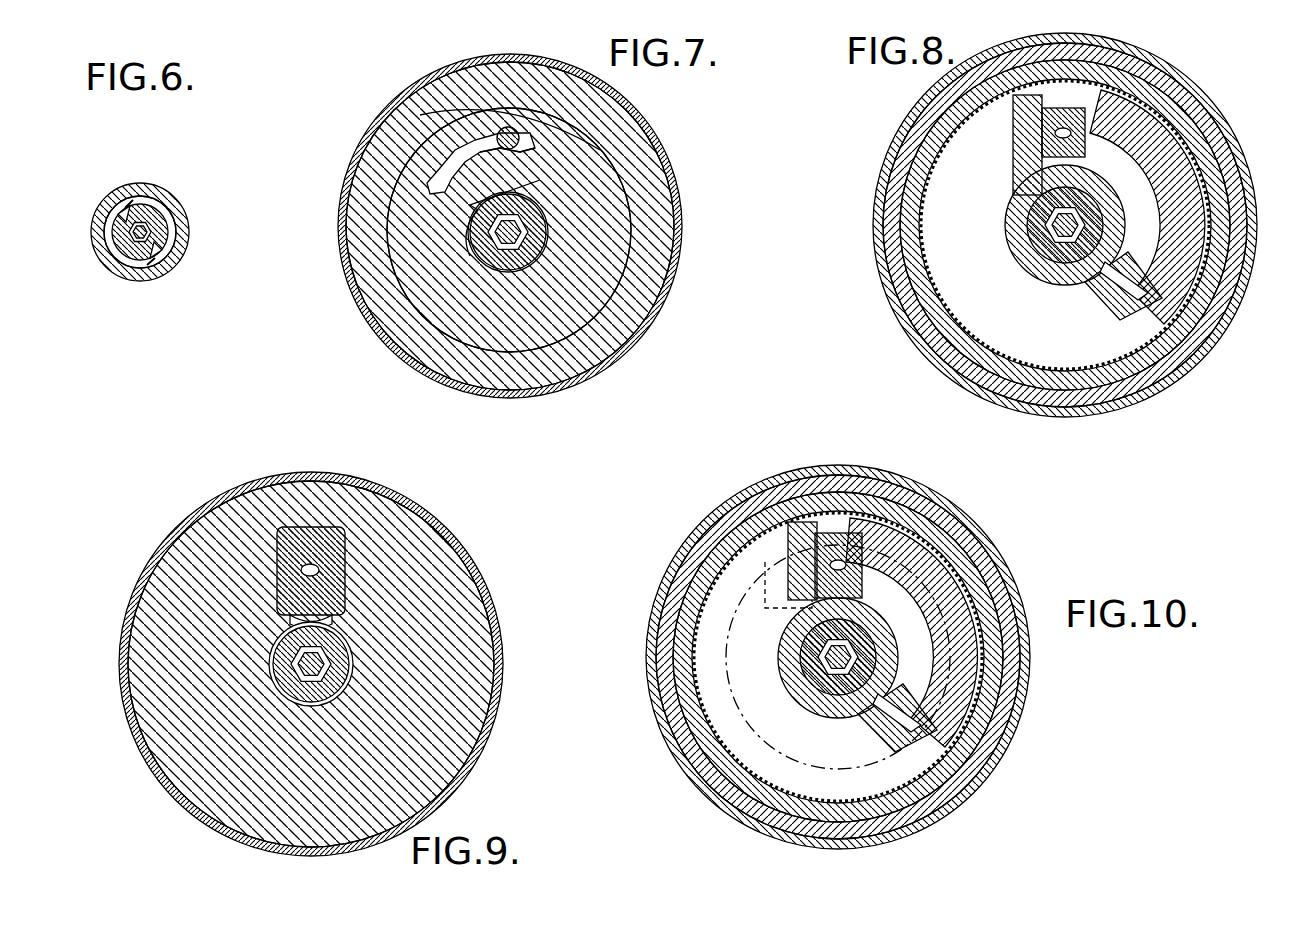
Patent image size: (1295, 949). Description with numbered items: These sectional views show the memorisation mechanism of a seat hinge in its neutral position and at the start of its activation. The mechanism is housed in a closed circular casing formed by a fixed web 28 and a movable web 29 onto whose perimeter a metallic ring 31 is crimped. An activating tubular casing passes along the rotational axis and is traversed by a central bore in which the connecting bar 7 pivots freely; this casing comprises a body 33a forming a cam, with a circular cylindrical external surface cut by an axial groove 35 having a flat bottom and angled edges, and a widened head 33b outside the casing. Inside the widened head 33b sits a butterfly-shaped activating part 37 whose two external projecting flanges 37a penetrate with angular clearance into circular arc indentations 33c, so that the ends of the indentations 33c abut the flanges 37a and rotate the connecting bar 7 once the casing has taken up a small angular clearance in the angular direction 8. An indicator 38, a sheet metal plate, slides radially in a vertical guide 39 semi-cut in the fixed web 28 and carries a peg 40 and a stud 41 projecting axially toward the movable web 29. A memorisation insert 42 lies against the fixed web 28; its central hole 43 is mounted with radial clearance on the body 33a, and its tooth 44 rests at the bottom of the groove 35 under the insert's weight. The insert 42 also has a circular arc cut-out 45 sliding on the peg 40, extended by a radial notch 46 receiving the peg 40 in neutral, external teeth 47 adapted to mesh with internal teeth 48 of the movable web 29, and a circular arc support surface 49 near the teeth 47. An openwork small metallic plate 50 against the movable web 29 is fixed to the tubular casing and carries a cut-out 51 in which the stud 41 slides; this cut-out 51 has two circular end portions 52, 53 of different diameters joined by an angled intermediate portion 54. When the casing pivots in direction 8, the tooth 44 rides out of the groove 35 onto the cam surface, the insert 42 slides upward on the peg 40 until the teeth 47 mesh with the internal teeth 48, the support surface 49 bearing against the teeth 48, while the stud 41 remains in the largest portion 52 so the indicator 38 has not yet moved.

In FIG. 6, the connecting bar 7 is at (132, 238).
In FIG. 7, the connecting bar 7 is at (500, 236).
In FIG. 8, the connecting bar 7 is at (1048, 226).
In FIG. 9, the connecting bar 7 is at (304, 670).
In FIG. 10, the connecting bar 7 is at (838, 657).
In FIG. 10, the angular direction 8 is at (685, 462).
In FIG. 8, the fixed web 28 is at (893, 254).
In FIG. 9, the fixed web 28 is at (418, 560).
In FIG. 10, the fixed web 28 is at (670, 607).
In FIG. 7, the movable web 29 is at (626, 298).
In FIG. 8, the movable web 29 is at (934, 308).
In FIG. 10, the movable web 29 is at (708, 742).
In FIG. 7, the metallic ring 31 is at (402, 360).
In FIG. 8, the metallic ring 31 is at (1232, 328).
In FIG. 9, the metallic ring 31 is at (175, 800).
In FIG. 10, the metallic ring 31 is at (995, 763).
In FIG. 7, the body forming a cam 33a is at (548, 268).
In FIG. 8, the body forming a cam 33a is at (1104, 248).
In FIG. 9, the body forming a cam 33a is at (332, 650).
In FIG. 10, the body forming a cam 33a is at (910, 693).
In FIG. 6, the widened head 33b is at (180, 265).
In FIG. 6, the circular arc indentations 33c is at (165, 205).
In FIG. 7, the axial groove 35 is at (593, 195).
In FIG. 10, the axial groove 35 is at (880, 642).
In FIG. 6, the activating part 37 is at (160, 228).
In FIG. 6, the external projecting flanges 37a is at (135, 200).
In FIG. 9, the indicator 38 is at (290, 545).
In FIG. 9, the vertical guide 39 is at (276, 612).
In FIG. 8, the peg 40 is at (1153, 100).
In FIG. 10, the peg 40 is at (795, 528).
In FIG. 7, the stud 41 is at (513, 130).
In FIG. 10, the stud 41 is at (912, 546).
In FIG. 8, the memorisation insert 42 is at (1120, 310).
In FIG. 8, the central hole 43 is at (1064, 286).
In FIG. 10, the tooth 44 is at (828, 600).
In FIG. 8, the circular arc cut-out 45 is at (1196, 178).
In FIG. 10, the circular arc cut-out 45 is at (855, 538).
In FIG. 8, the radial notch 46 is at (1052, 107).
In FIG. 10, the radial notch 46 is at (802, 561).
In FIG. 8, the external teeth 47 is at (1104, 98).
In FIG. 10, the external teeth 47 is at (872, 521).
In FIG. 8, the internal teeth 48 is at (940, 165).
In FIG. 10, the internal teeth 48 is at (700, 675).
In FIG. 8, the circular arc support surface 49 is at (1185, 144).
In FIG. 10, the circular arc support surface 49 is at (942, 583).
In FIG. 7, the small metallic plate 50 is at (610, 215).
In FIG. 10, the small metallic plate 50 is at (680, 730).
In FIG. 7, the cut-out 51 is at (490, 145).
In FIG. 10, the cut-out 51 is at (909, 557).
In FIG. 7, the circular end portion 52 is at (540, 142).
In FIG. 7, the circular end portion 53 is at (440, 172).
In FIG. 7, the intermediate portion 54 is at (455, 150).